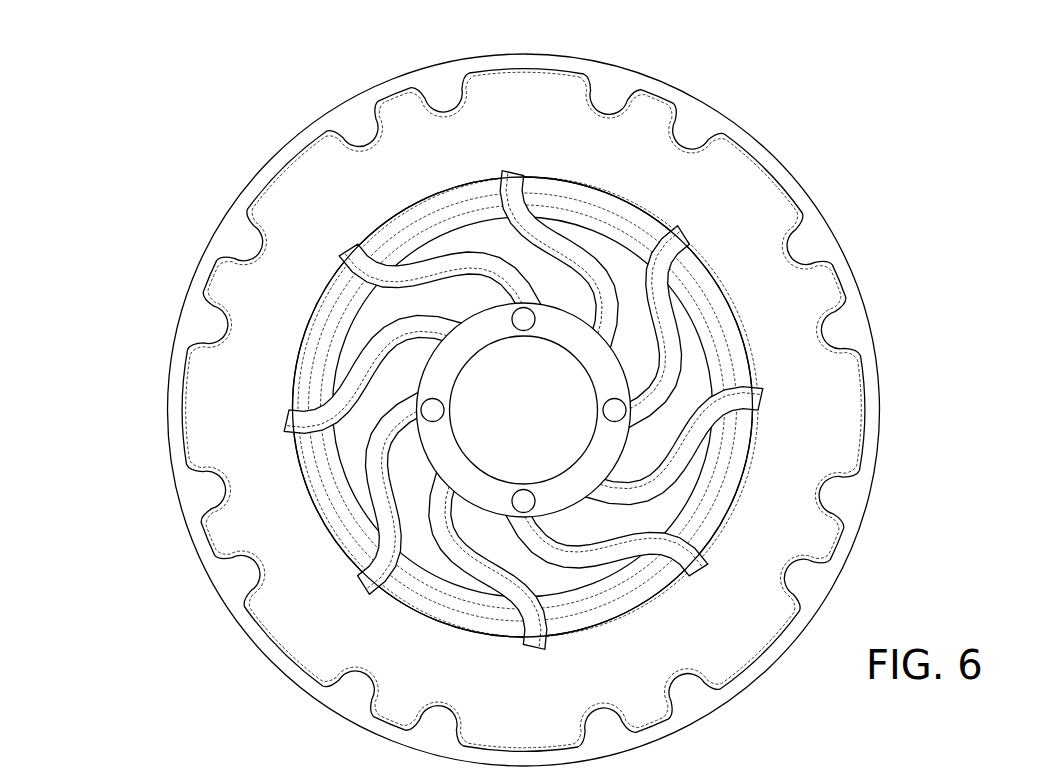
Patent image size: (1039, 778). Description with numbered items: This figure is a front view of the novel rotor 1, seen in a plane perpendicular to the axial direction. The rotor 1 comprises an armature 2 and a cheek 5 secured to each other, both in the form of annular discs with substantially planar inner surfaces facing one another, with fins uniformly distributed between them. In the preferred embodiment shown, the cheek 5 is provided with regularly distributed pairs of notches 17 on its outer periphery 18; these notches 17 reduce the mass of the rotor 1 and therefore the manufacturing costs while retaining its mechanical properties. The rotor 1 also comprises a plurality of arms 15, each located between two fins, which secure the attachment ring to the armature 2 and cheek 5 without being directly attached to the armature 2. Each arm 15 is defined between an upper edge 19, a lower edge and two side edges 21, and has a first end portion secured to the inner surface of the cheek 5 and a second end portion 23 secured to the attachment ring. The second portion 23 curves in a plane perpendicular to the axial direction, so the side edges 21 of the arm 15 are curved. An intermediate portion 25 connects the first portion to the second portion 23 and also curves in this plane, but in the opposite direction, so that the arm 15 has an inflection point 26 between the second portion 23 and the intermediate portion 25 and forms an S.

The rotor 1 is at (246, 128).
The armature 2 is at (810, 194).
The cheek 5 is at (871, 409).
The arm 15 is at (671, 246).
The notches 17 is at (231, 582).
The outer periphery 18 is at (758, 659).
The upper edge 19 is at (334, 442).
The side edges 21 is at (482, 254).
The second end portion 23 is at (676, 404).
The intermediate portion 25 is at (644, 289).
The inflection point 26 is at (689, 456).